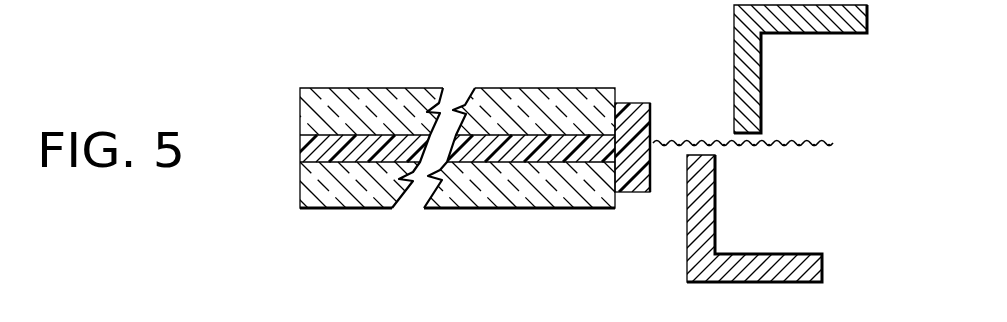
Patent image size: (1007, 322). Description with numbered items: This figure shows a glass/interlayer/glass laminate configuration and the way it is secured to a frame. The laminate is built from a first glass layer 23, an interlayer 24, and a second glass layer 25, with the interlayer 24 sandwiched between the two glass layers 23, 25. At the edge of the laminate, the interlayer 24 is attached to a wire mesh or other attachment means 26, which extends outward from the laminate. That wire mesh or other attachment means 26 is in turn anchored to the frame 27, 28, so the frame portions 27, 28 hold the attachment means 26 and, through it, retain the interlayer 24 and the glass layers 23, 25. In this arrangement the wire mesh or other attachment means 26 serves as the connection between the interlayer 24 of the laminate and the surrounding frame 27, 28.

The glass 23 is at (300, 112).
The interlayer 24 is at (300, 148).
The glass 25 is at (300, 185).
The wire mesh or other attachment means 26 is at (792, 150).
The frame 27 is at (733, 36).
The frame 28 is at (688, 260).